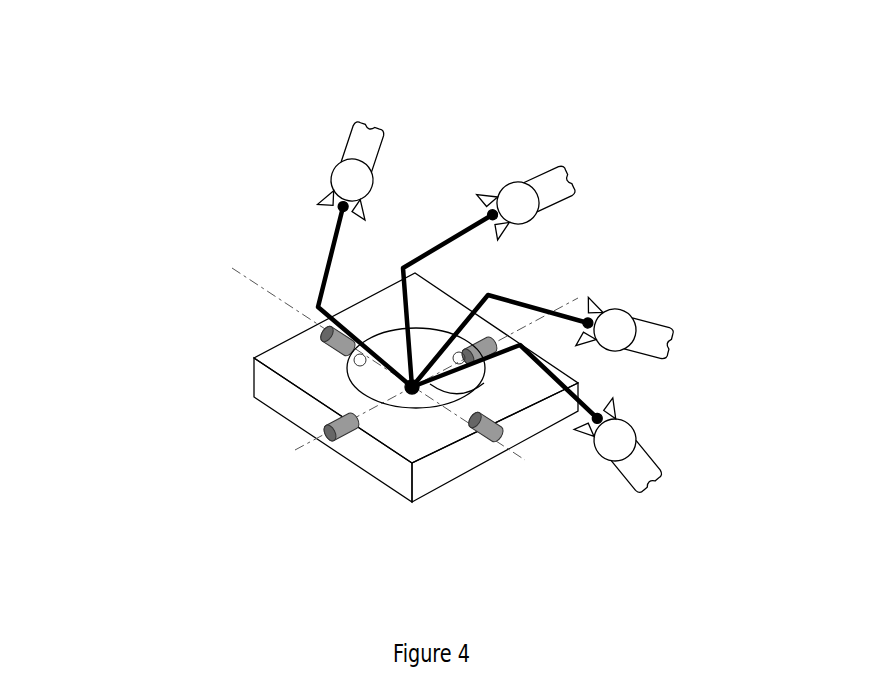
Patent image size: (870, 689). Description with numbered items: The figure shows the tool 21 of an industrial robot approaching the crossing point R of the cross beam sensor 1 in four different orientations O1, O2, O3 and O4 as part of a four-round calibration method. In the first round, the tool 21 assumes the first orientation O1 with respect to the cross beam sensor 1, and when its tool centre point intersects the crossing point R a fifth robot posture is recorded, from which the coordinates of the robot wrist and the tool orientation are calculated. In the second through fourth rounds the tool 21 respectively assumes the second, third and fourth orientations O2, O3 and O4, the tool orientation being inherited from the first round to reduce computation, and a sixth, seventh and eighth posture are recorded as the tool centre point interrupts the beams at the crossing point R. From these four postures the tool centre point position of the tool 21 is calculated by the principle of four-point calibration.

The cross beam sensor 1 is at (405, 385).
The tool 21 is at (408, 384).
The crossing point R is at (408, 382).
The first orientation O1 is at (370, 127).
The second orientation O2 is at (566, 176).
The third orientation O3 is at (676, 329).
The fourth orientation O4 is at (668, 467).